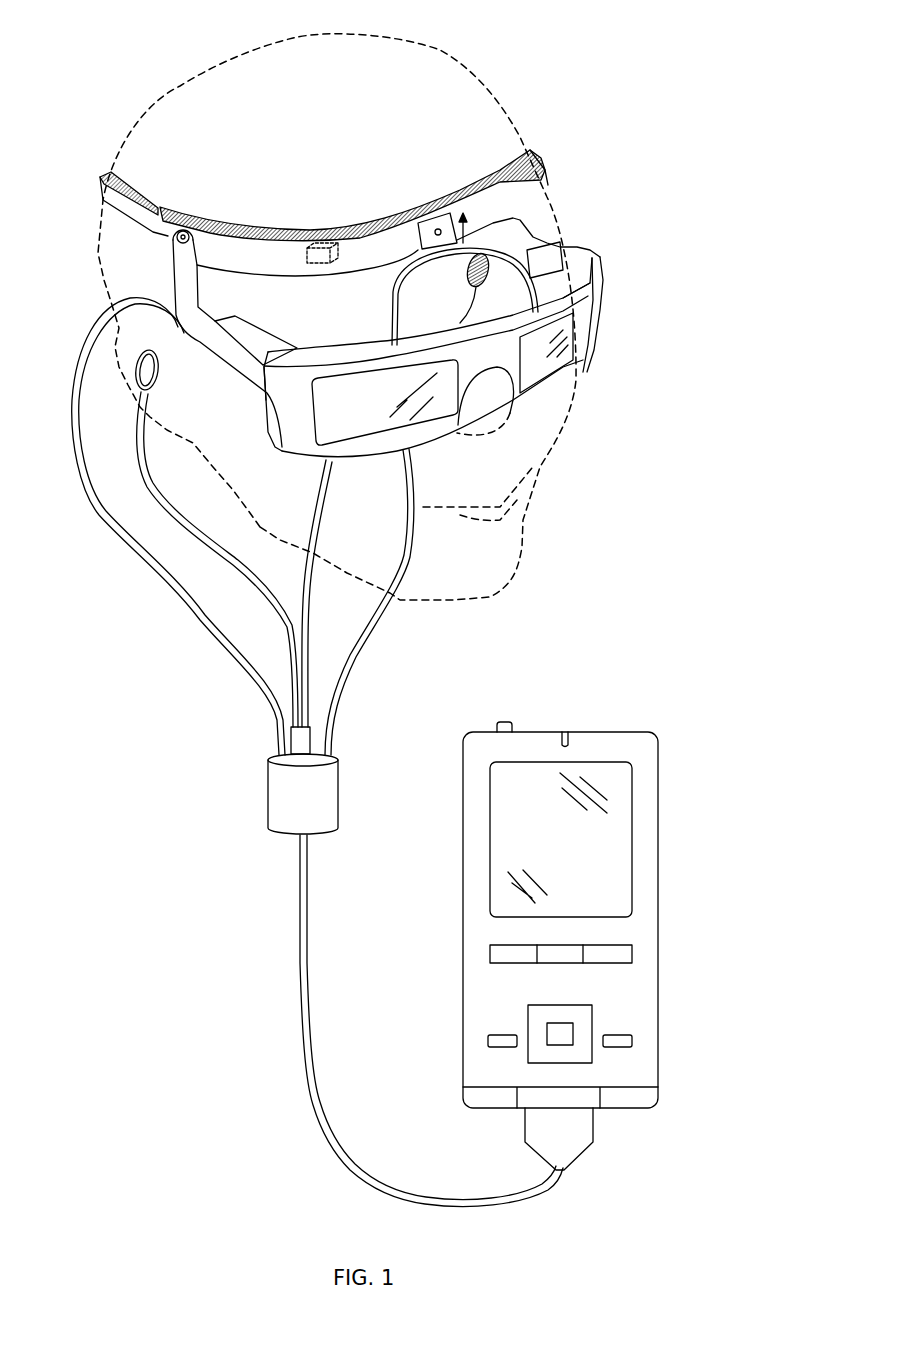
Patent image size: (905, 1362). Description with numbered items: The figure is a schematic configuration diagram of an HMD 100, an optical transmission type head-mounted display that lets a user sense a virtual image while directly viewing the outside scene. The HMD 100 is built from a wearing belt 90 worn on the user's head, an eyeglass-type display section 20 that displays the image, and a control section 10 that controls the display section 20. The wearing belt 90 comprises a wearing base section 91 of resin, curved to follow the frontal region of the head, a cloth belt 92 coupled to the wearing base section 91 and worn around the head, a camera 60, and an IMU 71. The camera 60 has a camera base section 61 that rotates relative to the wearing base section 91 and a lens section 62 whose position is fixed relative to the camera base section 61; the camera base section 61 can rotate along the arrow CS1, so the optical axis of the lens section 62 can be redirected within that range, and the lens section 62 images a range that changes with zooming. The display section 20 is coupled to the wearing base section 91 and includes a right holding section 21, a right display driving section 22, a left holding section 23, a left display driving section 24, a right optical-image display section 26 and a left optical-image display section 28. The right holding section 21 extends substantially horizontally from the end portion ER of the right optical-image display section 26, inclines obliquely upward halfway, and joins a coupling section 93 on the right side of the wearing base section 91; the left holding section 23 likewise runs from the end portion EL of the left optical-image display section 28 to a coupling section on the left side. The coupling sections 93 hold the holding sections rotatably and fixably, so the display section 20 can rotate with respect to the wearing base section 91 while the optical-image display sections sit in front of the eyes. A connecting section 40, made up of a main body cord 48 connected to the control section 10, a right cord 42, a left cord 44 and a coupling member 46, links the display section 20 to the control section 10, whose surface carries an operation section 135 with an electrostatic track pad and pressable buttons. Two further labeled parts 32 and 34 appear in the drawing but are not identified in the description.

The HMD 100 is at (677, 70).
The control section 10 is at (645, 715).
The operation section 135 is at (633, 934).
The display section 20 is at (608, 248).
The right holding section 21 is at (221, 386).
The right display driving section 22 is at (250, 330).
The left holding section 23 is at (582, 238).
The left display driving section 24 is at (550, 247).
The right optical-image display section 26 is at (362, 433).
The left optical-image display section 28 is at (582, 347).
The right earphone 32 is at (142, 370).
The left earphone 34 is at (468, 280).
The connecting section 40 is at (366, 746).
The right cord 42 is at (165, 587).
The left cord 44 is at (370, 620).
The coupling member 46 is at (323, 793).
The main body cord 48 is at (300, 980).
The camera 60 is at (433, 162).
The camera base section 61 is at (412, 228).
The lens section 62 is at (437, 223).
The IMU 71 is at (318, 240).
The wearing belt 90 is at (540, 165).
The wearing base section 91 is at (507, 165).
The belt 92 is at (118, 168).
The coupling section 93 is at (172, 238).
The arrow CS1 is at (475, 222).
The end portion EL is at (600, 297).
The end portion ER is at (290, 433).